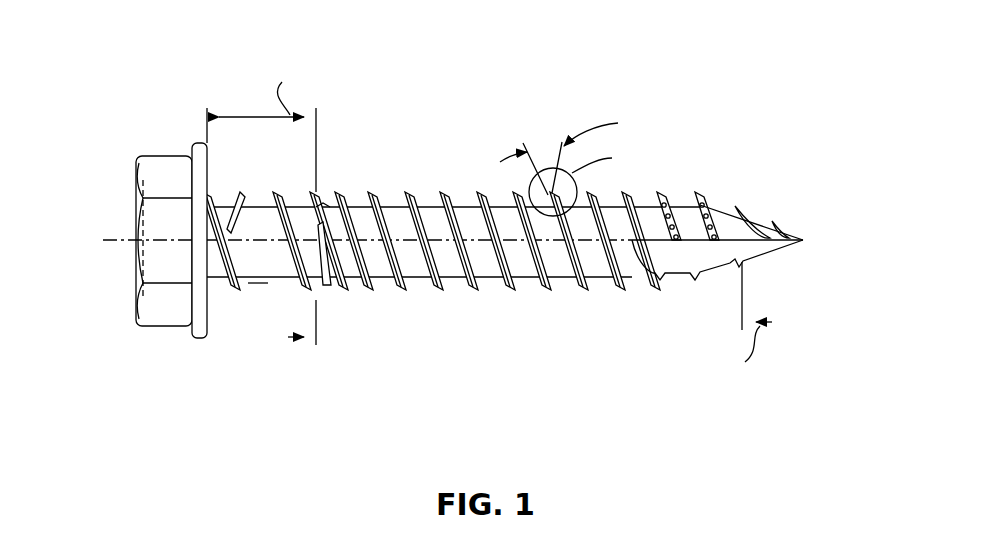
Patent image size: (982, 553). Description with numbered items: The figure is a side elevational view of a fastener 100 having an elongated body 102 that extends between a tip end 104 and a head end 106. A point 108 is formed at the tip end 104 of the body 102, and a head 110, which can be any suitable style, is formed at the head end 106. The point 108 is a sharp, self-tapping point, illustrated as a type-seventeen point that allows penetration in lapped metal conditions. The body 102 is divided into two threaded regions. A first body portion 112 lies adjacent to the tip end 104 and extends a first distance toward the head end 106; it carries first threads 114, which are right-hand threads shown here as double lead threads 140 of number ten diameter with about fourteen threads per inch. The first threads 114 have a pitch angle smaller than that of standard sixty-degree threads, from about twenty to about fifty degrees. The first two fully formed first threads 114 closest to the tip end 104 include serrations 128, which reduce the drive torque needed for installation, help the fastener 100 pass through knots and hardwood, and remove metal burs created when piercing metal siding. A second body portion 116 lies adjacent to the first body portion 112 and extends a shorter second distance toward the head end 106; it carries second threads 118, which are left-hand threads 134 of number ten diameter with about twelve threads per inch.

The fastener 100 is at (135, 40).
The body 102 is at (423, 192).
The tip end 104 is at (793, 269).
The head end 106 is at (142, 352).
The point 108 is at (804, 238).
The head 110 is at (136, 165).
The first body portion 112 is at (530, 286).
The first threads 114 is at (441, 283).
The second body portion 116 is at (262, 292).
The second threads 118 is at (238, 283).
The serrations 128 is at (669, 205).
The left-hand threads 134 is at (245, 287).
The double lead threads 140 is at (512, 286).